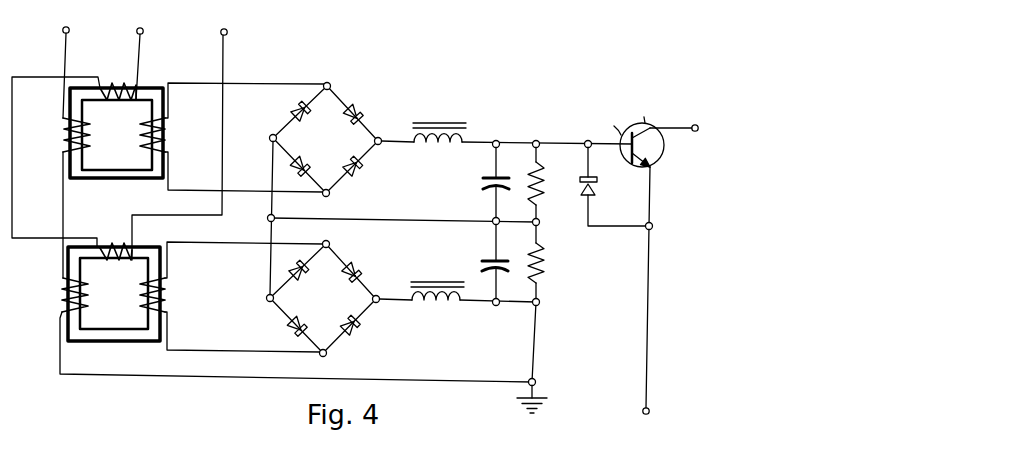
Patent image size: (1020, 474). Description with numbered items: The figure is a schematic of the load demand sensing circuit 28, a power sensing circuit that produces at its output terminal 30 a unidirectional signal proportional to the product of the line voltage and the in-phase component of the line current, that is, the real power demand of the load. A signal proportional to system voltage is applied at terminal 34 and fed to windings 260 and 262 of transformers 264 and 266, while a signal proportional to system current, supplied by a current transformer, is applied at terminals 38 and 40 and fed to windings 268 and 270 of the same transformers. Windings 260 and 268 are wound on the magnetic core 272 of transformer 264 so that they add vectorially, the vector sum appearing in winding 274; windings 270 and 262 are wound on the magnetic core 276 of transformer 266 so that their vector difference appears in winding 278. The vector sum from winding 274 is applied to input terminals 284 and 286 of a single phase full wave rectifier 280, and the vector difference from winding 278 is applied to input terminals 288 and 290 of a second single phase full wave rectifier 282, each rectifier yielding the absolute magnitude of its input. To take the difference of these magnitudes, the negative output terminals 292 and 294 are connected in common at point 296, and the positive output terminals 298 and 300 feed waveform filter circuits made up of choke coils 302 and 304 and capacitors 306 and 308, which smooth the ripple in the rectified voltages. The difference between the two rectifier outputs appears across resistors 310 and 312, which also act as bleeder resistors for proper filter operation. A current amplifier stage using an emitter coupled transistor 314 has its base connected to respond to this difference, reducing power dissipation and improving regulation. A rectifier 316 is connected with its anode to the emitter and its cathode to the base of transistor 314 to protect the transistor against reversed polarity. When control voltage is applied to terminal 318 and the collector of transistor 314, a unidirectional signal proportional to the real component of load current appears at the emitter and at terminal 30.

The load demand sensing circuit 28 is at (372, 48).
The output terminal 30 is at (647, 415).
The terminal 34 is at (66, 26).
The terminal 38 is at (140, 28).
The terminal 40 is at (224, 28).
The winding 260 is at (62, 140).
The winding 262 is at (60, 297).
The transformer 264 is at (104, 146).
The transformer 266 is at (99, 304).
The winding 268 is at (118, 80).
The winding 270 is at (112, 241).
The magnetic core 272 is at (116, 130).
The winding 274 is at (168, 141).
The magnetic core 276 is at (114, 289).
The winding 278 is at (167, 297).
The single phase full wave rectifier 280 is at (327, 134).
The single phase full wave rectifier 282 is at (318, 300).
The input terminal 284 is at (331, 82).
The input terminal 286 is at (330, 196).
The input terminal 288 is at (331, 246).
The input terminal 290 is at (327, 355).
The negative output terminal 292 is at (271, 133).
The negative output terminal 294 is at (267, 295).
The point 296 is at (266, 218).
The positive output terminal 298 is at (382, 136).
The positive output terminal 300 is at (380, 294).
The choke coil 302 is at (447, 148).
The choke coil 304 is at (448, 304).
The capacitor 306 is at (482, 181).
The capacitor 308 is at (480, 262).
The resistor 310 is at (545, 186).
The resistor 312 is at (545, 263).
The transistor 314 is at (664, 153).
The rectifier 316 is at (600, 187).
The terminal 318 is at (695, 124).